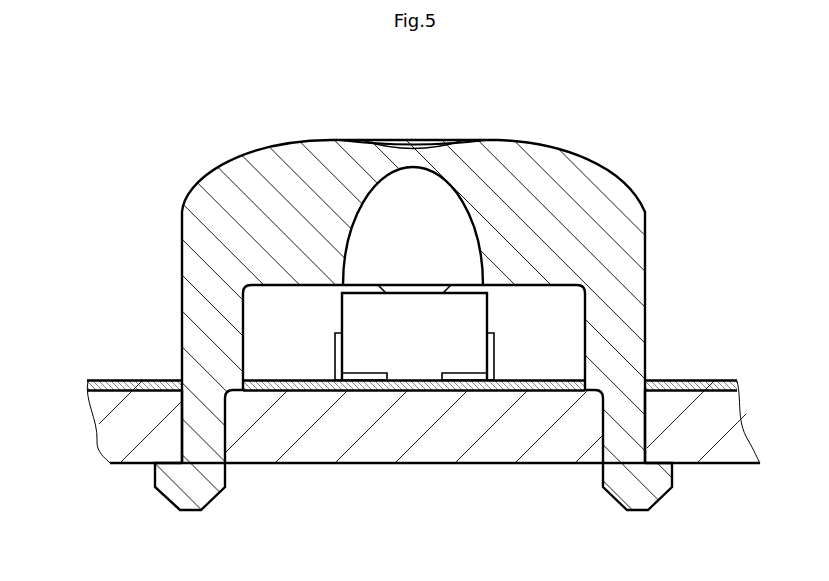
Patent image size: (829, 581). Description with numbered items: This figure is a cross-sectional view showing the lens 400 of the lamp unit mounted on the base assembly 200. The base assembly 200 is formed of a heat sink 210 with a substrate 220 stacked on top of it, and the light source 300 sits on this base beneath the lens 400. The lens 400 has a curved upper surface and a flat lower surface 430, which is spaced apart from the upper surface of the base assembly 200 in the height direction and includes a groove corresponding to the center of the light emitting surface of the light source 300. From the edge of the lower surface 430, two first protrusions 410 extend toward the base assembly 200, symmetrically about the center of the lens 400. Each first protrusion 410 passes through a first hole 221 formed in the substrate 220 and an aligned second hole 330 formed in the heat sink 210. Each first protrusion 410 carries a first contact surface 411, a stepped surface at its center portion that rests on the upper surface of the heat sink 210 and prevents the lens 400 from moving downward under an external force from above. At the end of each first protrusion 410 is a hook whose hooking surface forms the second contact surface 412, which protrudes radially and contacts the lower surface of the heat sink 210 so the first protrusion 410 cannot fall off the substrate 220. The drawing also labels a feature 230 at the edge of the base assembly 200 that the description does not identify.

The lens 400 is at (578, 130).
The first protrusion 410 is at (207, 333).
The first contact surface 411 is at (231, 470).
The second contact surface 412 is at (165, 460).
The lower surface 430 is at (288, 290).
The light source 300 is at (417, 340).
The second hole 330 is at (655, 405).
The base assembly 200 is at (650, 324).
The heat sink 210 is at (733, 412).
The substrate 220 is at (692, 386).
The first hole 221 is at (734, 416).
The board opening 230 is at (181, 437).